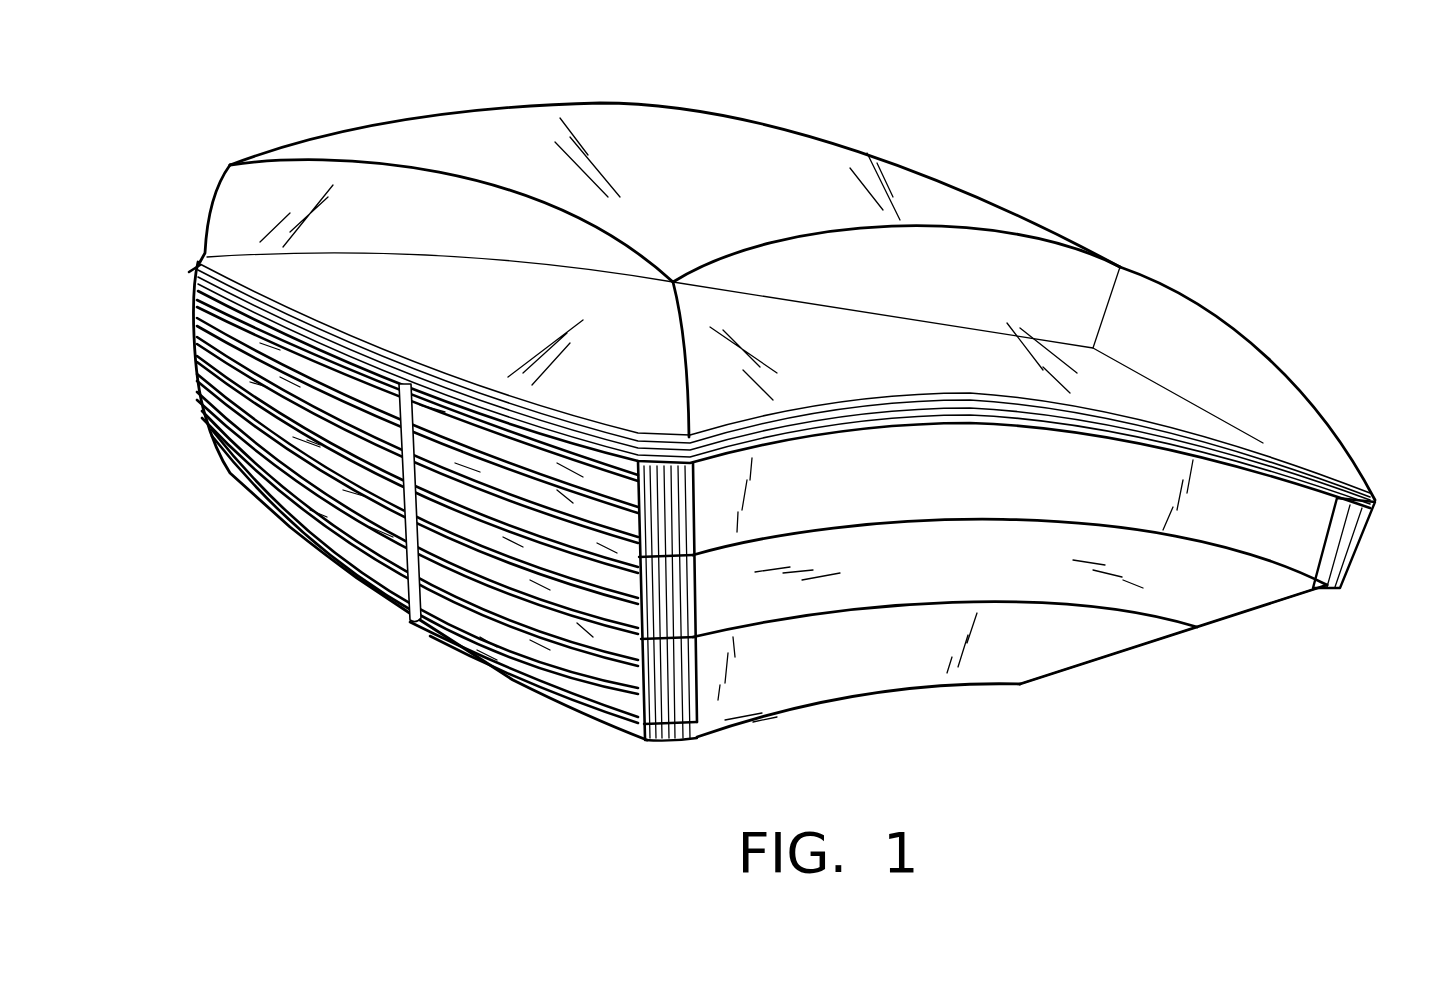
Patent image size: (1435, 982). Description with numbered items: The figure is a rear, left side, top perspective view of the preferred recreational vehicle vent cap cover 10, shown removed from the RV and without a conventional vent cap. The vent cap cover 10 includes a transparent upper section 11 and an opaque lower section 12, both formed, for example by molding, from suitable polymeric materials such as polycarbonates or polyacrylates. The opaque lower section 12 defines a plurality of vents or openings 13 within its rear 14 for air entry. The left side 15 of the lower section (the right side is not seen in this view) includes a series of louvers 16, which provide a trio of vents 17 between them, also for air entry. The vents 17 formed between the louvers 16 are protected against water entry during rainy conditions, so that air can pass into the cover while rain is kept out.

The vent cap cover 10 is at (1207, 166).
The transparent upper section 11 is at (471, 92).
The opaque lower section 12 is at (181, 406).
The vents 13 is at (492, 631).
The rear 14 is at (248, 461).
The left side 15 is at (1324, 525).
The louvers 16 is at (1100, 633).
The vents 17 is at (1007, 538).